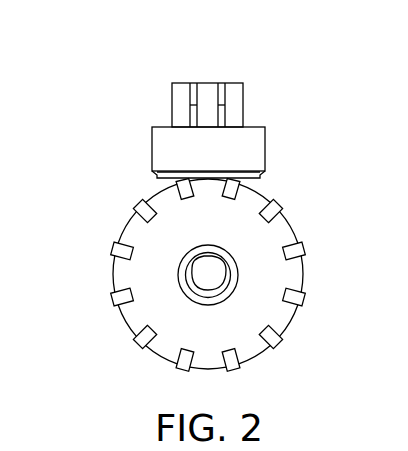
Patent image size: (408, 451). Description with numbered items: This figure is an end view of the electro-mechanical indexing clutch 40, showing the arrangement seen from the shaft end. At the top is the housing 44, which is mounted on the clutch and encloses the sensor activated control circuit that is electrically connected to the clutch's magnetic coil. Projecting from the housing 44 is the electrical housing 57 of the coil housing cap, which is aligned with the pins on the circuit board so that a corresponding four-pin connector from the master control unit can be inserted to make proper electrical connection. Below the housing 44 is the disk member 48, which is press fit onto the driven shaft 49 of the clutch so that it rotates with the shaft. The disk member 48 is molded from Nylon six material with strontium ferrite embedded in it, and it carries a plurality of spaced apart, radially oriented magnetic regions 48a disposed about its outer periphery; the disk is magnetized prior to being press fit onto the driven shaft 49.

The electro-mechanical indexing clutch 40 is at (125, 80).
The housing 44 is at (152, 145).
The electrical housing 57 is at (243, 100).
The disk member 48 is at (170, 317).
The magnetic regions 48a is at (127, 320).
The driven shaft 49 is at (207, 273).